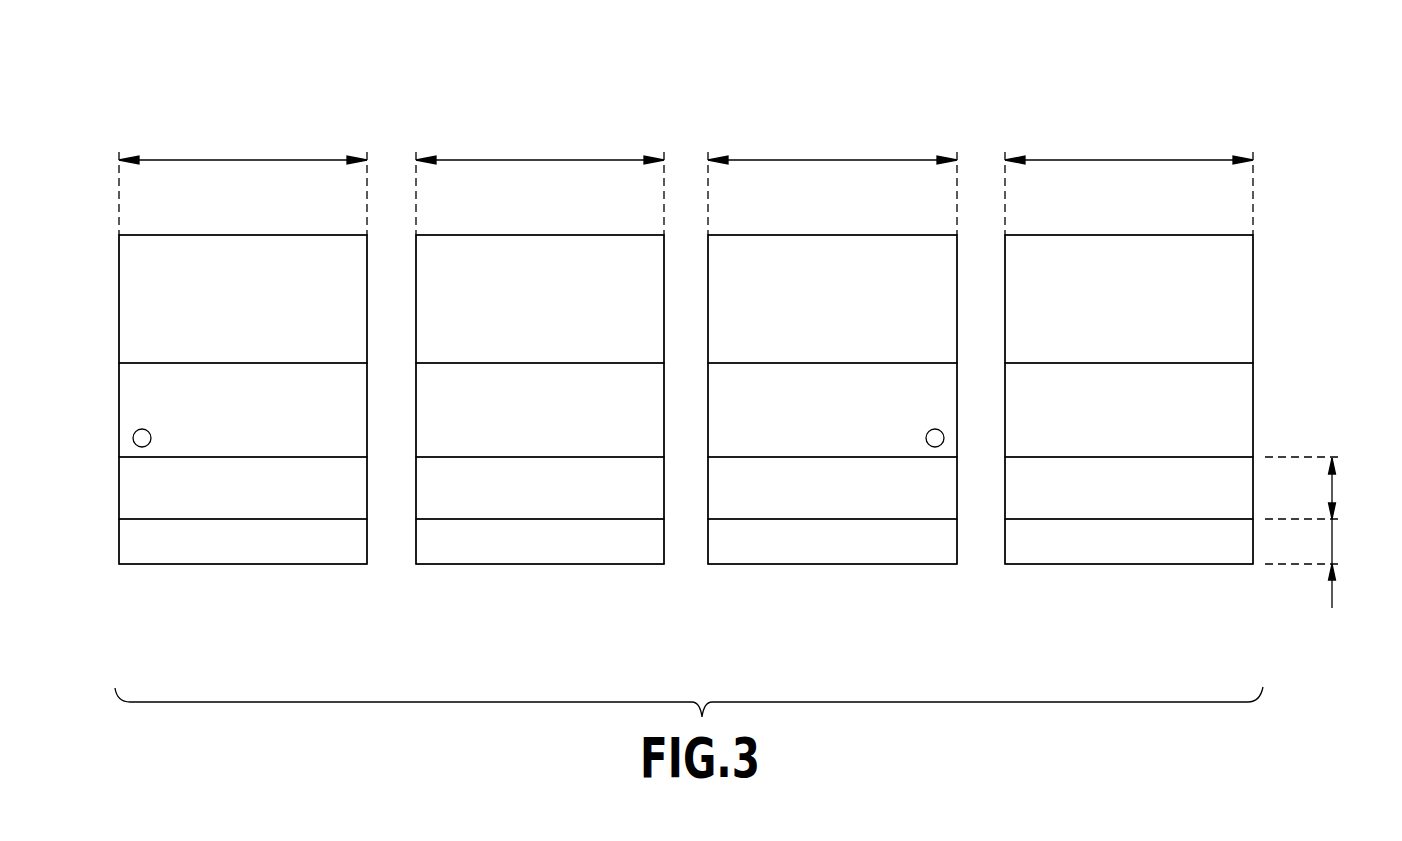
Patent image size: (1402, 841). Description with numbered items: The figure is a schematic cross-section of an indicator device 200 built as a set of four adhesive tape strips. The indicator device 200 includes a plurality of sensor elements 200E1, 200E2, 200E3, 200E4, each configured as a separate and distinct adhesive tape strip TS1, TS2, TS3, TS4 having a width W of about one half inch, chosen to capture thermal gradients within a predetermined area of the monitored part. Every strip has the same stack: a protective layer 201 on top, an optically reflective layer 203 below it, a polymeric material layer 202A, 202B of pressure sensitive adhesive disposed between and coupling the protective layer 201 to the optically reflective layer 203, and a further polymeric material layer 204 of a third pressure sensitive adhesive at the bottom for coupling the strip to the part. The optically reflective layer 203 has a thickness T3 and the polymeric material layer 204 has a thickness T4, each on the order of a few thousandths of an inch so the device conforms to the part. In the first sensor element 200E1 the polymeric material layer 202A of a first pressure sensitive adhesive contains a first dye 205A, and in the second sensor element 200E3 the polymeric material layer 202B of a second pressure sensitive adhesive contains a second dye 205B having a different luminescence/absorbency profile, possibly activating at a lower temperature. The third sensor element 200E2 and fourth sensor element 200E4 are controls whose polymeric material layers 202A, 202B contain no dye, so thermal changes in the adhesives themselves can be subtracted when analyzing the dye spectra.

The indicator device 200 is at (147, 113).
The first sensor element 200E1 is at (240, 112).
The third sensor element 200E2 is at (538, 112).
The second sensor element 200E3 is at (833, 112).
The fourth sensor element 200E4 is at (1130, 112).
The protective layer 201 is at (128, 287).
The polymeric material layer 202A is at (127, 395).
The polymeric material layer 202B is at (718, 428).
The optically reflective layer 203 is at (130, 473).
The polymeric material layer 204 is at (162, 565).
The first dye 205A is at (135, 444).
The second dye 205B is at (943, 446).
The width W is at (263, 158).
The thickness T3 is at (1335, 488).
The thickness T4 is at (1335, 543).
The adhesive tape strip TS1 is at (205, 620).
The adhesive tape strip TS2 is at (503, 607).
The adhesive tape strip TS3 is at (893, 620).
The adhesive tape strip TS4 is at (1188, 620).